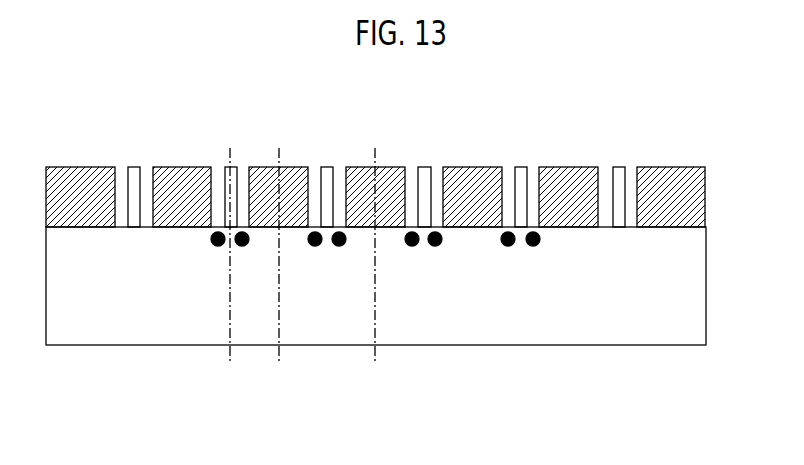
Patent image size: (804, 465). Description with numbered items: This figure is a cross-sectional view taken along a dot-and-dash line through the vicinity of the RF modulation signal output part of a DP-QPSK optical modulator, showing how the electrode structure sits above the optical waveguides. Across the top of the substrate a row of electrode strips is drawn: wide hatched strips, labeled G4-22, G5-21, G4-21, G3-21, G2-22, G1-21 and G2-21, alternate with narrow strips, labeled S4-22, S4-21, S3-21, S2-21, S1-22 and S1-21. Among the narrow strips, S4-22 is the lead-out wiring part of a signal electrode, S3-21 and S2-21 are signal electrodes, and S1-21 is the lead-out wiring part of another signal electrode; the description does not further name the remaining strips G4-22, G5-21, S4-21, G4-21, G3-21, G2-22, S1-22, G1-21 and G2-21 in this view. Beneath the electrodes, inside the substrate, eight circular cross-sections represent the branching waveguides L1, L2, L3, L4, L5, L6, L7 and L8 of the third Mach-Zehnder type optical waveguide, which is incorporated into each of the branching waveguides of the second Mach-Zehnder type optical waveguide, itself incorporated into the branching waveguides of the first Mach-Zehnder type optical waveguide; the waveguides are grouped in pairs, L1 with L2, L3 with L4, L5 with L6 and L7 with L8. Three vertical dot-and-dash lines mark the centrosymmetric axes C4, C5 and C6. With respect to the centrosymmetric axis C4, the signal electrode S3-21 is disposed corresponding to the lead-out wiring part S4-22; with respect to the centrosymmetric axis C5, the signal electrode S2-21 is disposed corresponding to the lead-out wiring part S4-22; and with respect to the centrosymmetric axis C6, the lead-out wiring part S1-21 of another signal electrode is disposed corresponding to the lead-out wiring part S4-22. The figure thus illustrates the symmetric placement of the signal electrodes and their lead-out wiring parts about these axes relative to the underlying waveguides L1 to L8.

The gate electrode G4-22 is at (77, 178).
The lead-out wiring part S4-22 is at (135, 170).
The gate electrode G5-21 is at (180, 177).
The source electrode S4-21 is at (235, 173).
The gate electrode G4-21 is at (292, 172).
The signal electrode S3-21 is at (330, 173).
The gate electrode G3-21 is at (397, 175).
The signal electrode S2-21 is at (427, 175).
The gate electrode G2-22 is at (470, 178).
The source electrode S1-22 is at (523, 178).
The gate electrode G1-21 is at (582, 177).
The lead-out wiring part of another signal electrode S1-21 is at (623, 180).
The gate electrode G2-21 is at (683, 178).
The centrosymmetric axis C4 is at (228, 272).
The centrosymmetric axis C5 is at (278, 272).
The centrosymmetric axis C6 is at (374, 272).
The branching waveguide L1 is at (214, 246).
The branching waveguide L2 is at (246, 246).
The branching waveguide L3 is at (311, 246).
The branching waveguide L4 is at (343, 246).
The branching waveguide L5 is at (408, 246).
The branching waveguide L6 is at (439, 246).
The branching waveguide L7 is at (504, 246).
The branching waveguide L8 is at (537, 246).